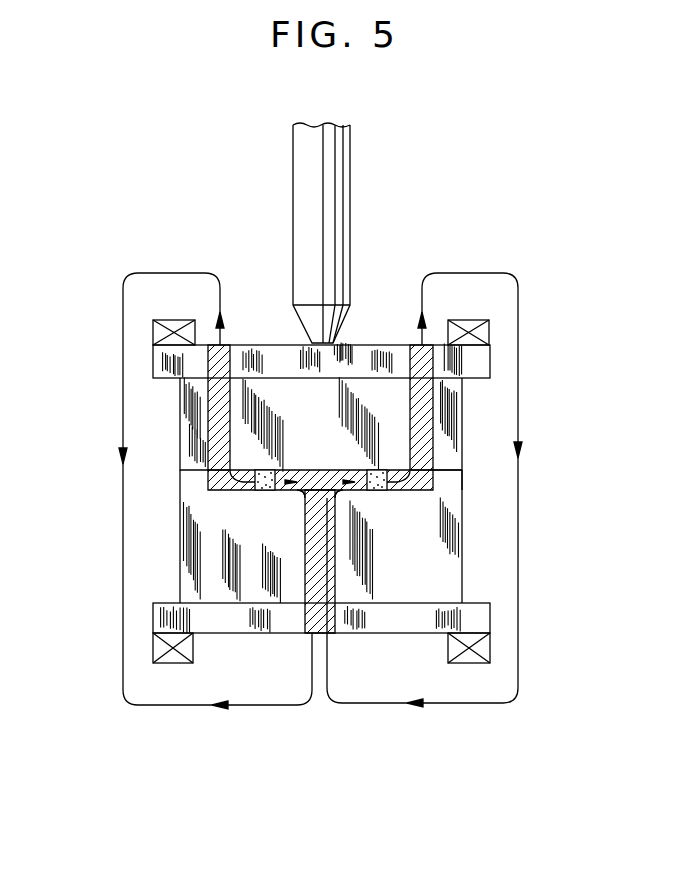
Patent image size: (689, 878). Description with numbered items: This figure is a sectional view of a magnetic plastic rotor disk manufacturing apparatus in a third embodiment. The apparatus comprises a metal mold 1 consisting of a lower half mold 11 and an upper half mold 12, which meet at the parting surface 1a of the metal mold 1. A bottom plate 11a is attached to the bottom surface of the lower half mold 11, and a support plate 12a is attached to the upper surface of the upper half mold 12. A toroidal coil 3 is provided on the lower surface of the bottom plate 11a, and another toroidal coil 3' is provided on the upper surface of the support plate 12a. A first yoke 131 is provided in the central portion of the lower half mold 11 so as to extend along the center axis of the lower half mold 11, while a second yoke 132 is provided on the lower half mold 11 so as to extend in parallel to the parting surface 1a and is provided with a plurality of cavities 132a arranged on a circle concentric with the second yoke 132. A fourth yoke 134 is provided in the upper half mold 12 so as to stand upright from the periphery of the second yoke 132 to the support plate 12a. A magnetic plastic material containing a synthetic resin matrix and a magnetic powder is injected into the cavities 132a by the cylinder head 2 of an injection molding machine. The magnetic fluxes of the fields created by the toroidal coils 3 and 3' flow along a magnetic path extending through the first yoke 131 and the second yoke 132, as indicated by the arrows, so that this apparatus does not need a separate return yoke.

The metal mold 1 is at (474, 493).
The parting surface 1a is at (450, 469).
The cylinder head 2 is at (340, 200).
The toroidal coil 3 is at (366, 659).
The toroidal coil 3' is at (363, 318).
The lower half mold 11 is at (463, 560).
The bottom plate 11a is at (486, 616).
The upper half mold 12 is at (462, 390).
The support plate 12a is at (362, 345).
The first yoke 131 is at (338, 562).
The second yoke 132 is at (210, 482).
The cavities 132a is at (262, 490).
The fourth yoke 134 is at (208, 425).